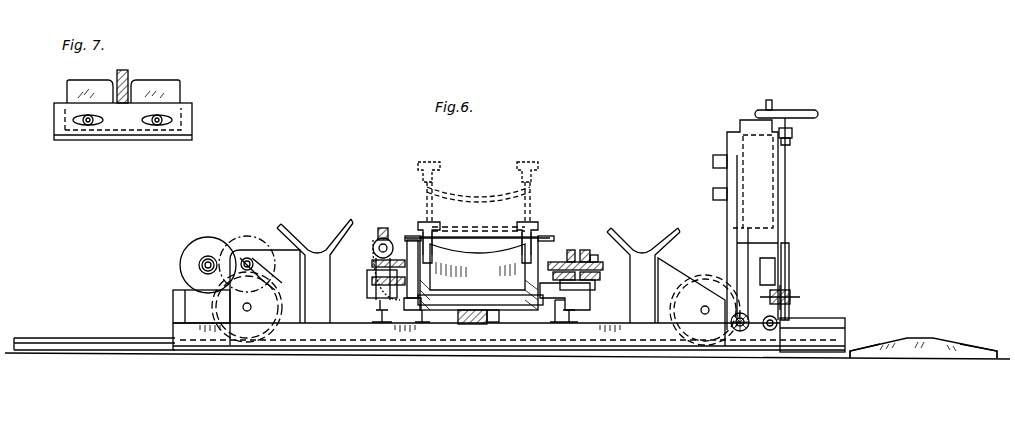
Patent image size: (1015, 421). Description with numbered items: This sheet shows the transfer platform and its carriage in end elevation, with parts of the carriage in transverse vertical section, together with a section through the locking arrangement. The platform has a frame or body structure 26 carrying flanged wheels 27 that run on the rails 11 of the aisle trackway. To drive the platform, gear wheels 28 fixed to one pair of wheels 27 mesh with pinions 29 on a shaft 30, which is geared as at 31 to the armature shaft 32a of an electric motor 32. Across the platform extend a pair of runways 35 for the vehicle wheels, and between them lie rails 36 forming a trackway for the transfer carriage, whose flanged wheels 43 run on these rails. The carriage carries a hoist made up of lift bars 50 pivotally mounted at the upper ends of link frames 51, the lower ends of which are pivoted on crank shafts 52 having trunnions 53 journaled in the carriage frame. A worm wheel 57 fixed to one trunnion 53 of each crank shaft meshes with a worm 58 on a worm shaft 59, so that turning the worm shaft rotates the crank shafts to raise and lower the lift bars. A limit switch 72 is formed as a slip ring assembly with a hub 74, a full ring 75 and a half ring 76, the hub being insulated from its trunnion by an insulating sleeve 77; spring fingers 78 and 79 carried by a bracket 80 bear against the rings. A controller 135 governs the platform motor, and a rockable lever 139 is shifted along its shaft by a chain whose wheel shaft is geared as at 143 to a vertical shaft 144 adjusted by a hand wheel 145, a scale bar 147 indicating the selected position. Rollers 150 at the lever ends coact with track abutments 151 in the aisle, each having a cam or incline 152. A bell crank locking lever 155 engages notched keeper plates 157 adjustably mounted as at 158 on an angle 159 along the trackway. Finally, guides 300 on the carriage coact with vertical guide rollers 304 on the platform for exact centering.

In FIG. 6, the rails 11 is at (95, 337).
In FIG. 6, the frame or body structure 26 is at (528, 347).
In FIG. 6, the flanged wheels 27 is at (210, 303).
In FIG. 6, the gear wheels 28 is at (233, 347).
In FIG. 6, the pinions 29 is at (248, 257).
In FIG. 6, the shaft 30 is at (268, 294).
In FIG. 6, the gearing 31 is at (202, 266).
In FIG. 6, the electric motor 32 is at (188, 250).
In FIG. 6, the armature shaft 32a is at (210, 257).
In FIG. 6, the guideways or runways 35 is at (300, 240).
In FIG. 6, the rails 36 is at (380, 322).
In FIG. 6, the flanged wheels 43 is at (367, 292).
In FIG. 6, the lift bars 50 is at (420, 162).
In FIG. 6, the link frame 51 is at (478, 250).
In FIG. 6, the crank shafts 52 is at (465, 300).
In FIG. 6, the trunnions 53 is at (418, 236).
In FIG. 6, the worm wheel 57 is at (372, 264).
In FIG. 6, the worms 58 is at (383, 238).
In FIG. 6, the worm shaft 59 is at (388, 255).
In FIG. 6, the limit switch 72 is at (594, 276).
In FIG. 6, the hub 74 is at (575, 255).
In FIG. 6, the full ring 75 is at (570, 260).
In FIG. 6, the mutilated or half ring 76 is at (584, 262).
In FIG. 6, the insulating sleeve 77 is at (586, 265).
In FIG. 6, the spring finger 78 is at (560, 302).
In FIG. 6, the spring finger 79 is at (590, 286).
In FIG. 6, the bracket 80 is at (560, 322).
In FIG. 6, the controller 135 is at (773, 193).
In FIG. 6, the rockable lever 139 is at (768, 332).
In FIG. 6, the gearing 143 is at (791, 298).
In FIG. 6, the vertical shaft 144 is at (789, 253).
In FIG. 6, the hand wheel 145 is at (800, 111).
In FIG. 6, the bar 147 is at (772, 282).
In FIG. 6, the rollers 150 is at (773, 319).
In FIG. 6, the track abutments 151 is at (921, 338).
In FIG. 6, the cam or incline 152 is at (873, 349).
In FIG. 7, the bell crank locking lever 155 is at (129, 80).
In FIG. 7, the notched keeper plates 157 is at (181, 92).
In FIG. 7, the adjustable mounting 158 is at (162, 122).
In FIG. 7, the angle 159 is at (128, 141).
In FIG. 6, the guides 300 is at (499, 318).
In FIG. 6, the vertical guide rollers 304 is at (478, 324).